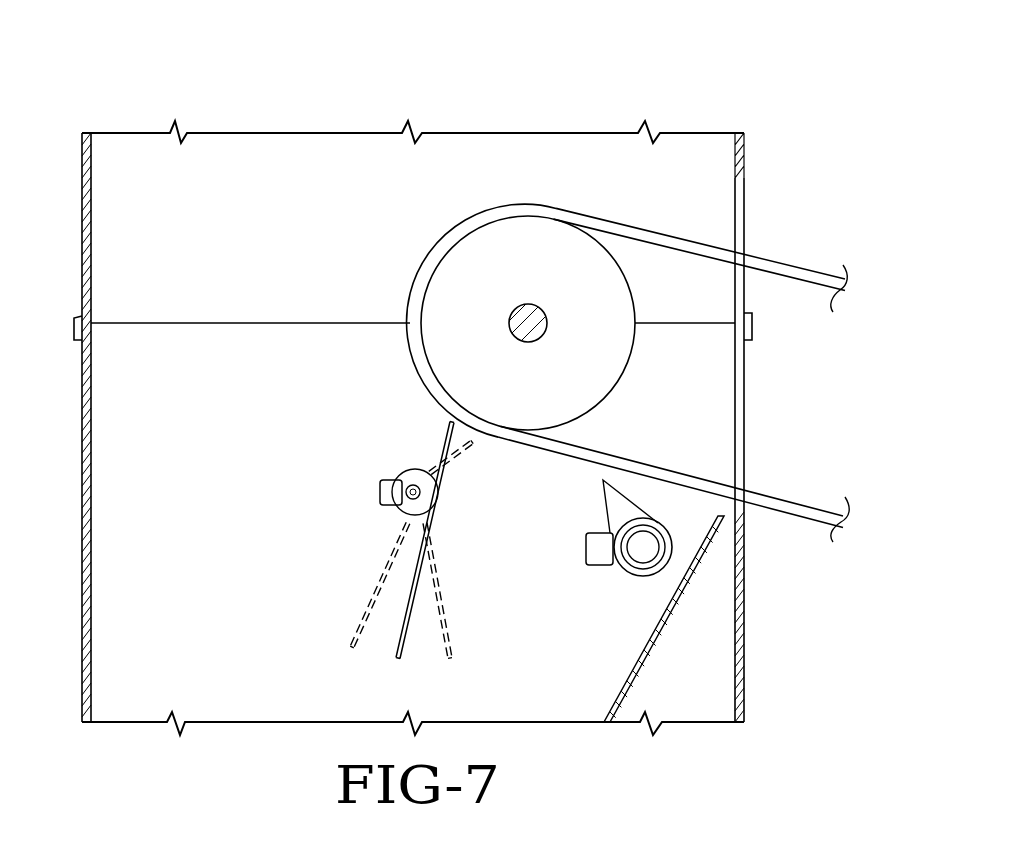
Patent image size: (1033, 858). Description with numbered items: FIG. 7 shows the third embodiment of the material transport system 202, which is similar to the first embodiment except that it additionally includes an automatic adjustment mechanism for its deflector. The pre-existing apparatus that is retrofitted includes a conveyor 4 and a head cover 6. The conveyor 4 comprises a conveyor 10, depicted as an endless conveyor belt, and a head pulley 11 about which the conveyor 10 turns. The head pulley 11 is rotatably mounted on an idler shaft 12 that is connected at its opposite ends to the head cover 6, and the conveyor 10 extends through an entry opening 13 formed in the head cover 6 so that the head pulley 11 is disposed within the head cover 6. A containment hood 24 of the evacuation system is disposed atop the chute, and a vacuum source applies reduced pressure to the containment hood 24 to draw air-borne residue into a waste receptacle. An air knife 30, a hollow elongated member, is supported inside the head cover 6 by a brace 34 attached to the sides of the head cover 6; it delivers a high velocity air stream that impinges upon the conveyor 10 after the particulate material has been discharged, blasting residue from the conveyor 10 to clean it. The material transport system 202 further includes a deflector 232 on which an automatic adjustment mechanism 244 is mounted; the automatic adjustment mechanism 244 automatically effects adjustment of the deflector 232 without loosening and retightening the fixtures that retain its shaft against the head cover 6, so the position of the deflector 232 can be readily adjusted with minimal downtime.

The material transport system 202 is at (656, 84).
The containment hood 24 is at (745, 148).
The conveyor 10 is at (762, 260).
The conveyor 4 is at (808, 270).
The idler shaft 12 is at (537, 330).
The head pulley 11 is at (572, 398).
The entry opening 13 is at (741, 443).
The automatic adjustment mechanism 244 is at (380, 491).
The deflector 232 is at (408, 608).
The brace 34 is at (590, 548).
The air knife 30 is at (633, 575).
The head cover 6 is at (750, 632).